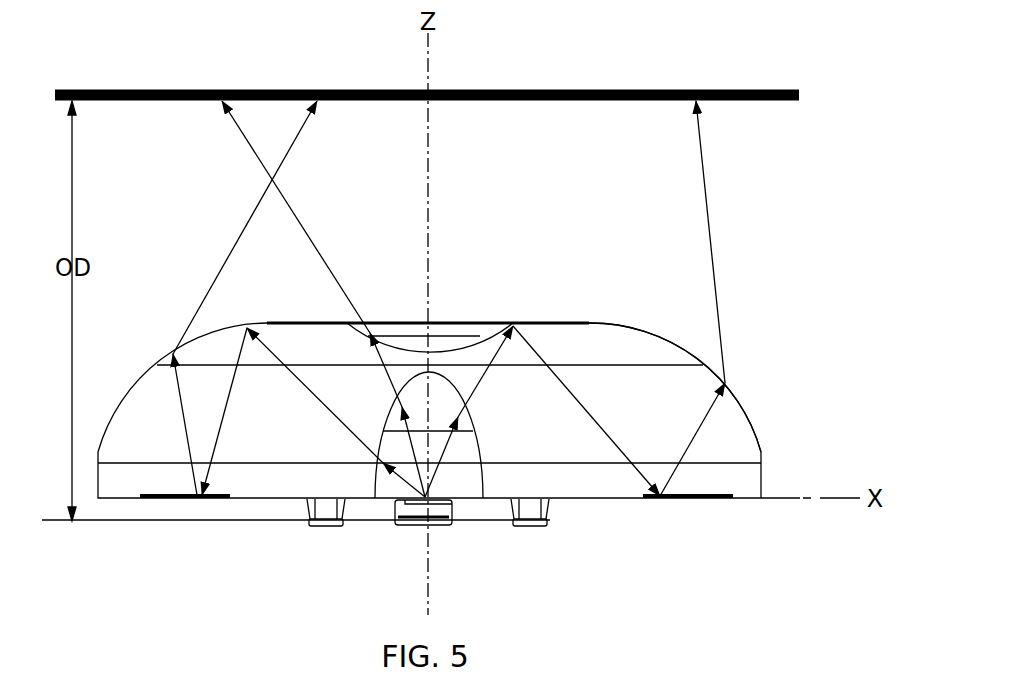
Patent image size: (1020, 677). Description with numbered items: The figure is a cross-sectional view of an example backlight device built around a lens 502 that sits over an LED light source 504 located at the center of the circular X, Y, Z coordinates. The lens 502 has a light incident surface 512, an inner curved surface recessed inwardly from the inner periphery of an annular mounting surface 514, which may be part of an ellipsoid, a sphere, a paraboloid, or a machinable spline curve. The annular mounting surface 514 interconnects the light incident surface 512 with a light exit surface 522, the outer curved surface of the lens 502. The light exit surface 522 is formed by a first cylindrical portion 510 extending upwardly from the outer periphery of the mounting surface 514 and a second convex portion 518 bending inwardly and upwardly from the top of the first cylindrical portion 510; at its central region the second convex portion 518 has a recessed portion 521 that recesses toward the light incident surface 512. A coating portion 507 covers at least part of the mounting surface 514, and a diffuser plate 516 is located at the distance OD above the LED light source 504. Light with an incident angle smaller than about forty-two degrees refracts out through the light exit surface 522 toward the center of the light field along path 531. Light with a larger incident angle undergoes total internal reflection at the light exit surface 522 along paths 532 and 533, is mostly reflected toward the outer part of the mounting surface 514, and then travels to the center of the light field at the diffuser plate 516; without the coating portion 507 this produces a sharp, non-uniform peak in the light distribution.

The lens 502 is at (148, 395).
The LED light source 504 is at (442, 527).
The coating portion 507 is at (160, 496).
The first cylindrical portion 510 is at (762, 479).
The light incident surface 512 is at (473, 337).
The annular mounting surface 514 is at (580, 500).
The diffuser plate 516 is at (757, 90).
The second convex portion 518 is at (740, 398).
The recessed portion 521 is at (447, 345).
The light exit surface 522 is at (638, 330).
The path 531 is at (238, 133).
The path 532 is at (302, 133).
The path 533 is at (697, 125).